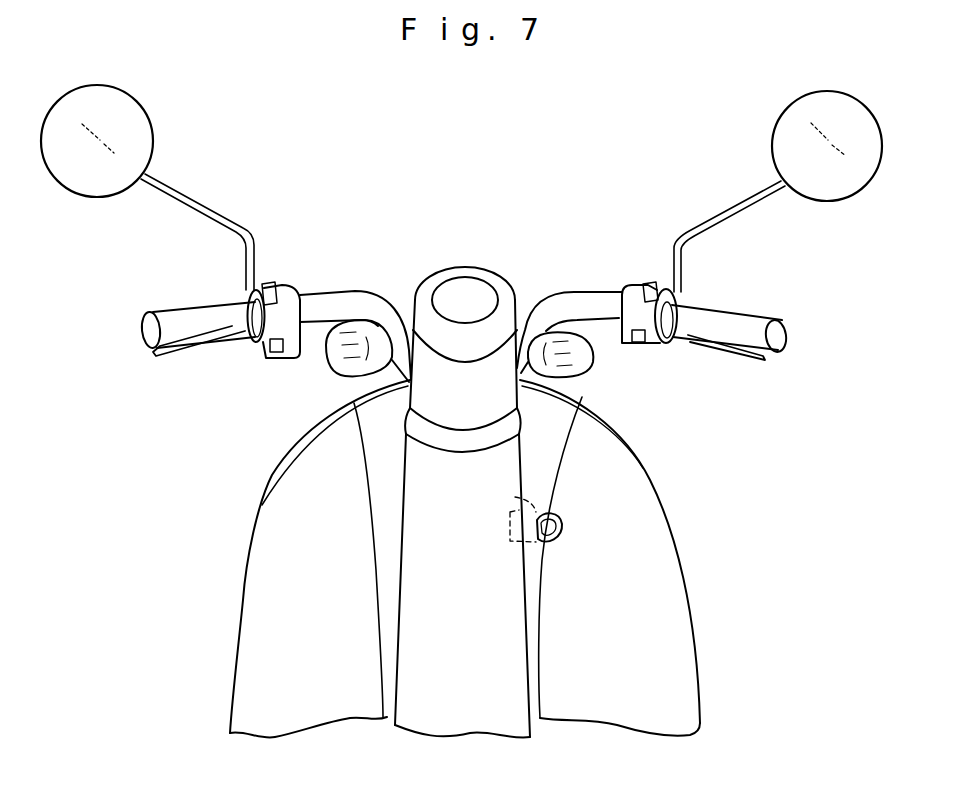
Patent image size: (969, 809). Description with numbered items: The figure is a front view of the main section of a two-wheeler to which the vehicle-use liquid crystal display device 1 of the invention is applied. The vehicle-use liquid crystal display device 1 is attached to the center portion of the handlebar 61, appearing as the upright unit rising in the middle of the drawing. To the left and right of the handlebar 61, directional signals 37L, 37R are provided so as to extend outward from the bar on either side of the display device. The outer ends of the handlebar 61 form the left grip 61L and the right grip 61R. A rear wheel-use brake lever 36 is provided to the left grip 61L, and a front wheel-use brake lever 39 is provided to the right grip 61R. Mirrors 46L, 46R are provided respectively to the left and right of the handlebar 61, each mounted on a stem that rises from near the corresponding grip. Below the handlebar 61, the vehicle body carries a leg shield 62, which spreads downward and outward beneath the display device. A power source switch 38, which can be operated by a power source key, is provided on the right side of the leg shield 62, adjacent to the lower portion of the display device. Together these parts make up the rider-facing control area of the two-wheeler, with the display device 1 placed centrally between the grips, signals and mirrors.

The vehicle-use liquid crystal display device 1 is at (509, 268).
The handlebar 61 is at (345, 292).
The left grip 61L is at (185, 317).
The right grip 61R is at (741, 318).
The mirror 46L is at (148, 128).
The mirror 46R is at (772, 142).
The rear wheel-use brake lever 36 is at (171, 361).
The front wheel-use brake lever 39 is at (748, 359).
The directional signal 37L is at (333, 383).
The directional signal 37R is at (595, 366).
The power source switch 38 is at (515, 497).
The leg shield 62 is at (675, 630).